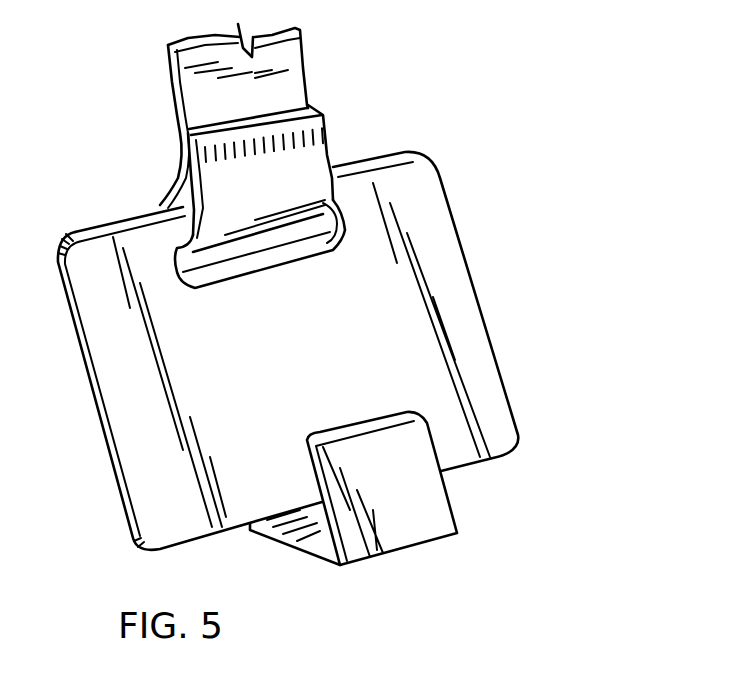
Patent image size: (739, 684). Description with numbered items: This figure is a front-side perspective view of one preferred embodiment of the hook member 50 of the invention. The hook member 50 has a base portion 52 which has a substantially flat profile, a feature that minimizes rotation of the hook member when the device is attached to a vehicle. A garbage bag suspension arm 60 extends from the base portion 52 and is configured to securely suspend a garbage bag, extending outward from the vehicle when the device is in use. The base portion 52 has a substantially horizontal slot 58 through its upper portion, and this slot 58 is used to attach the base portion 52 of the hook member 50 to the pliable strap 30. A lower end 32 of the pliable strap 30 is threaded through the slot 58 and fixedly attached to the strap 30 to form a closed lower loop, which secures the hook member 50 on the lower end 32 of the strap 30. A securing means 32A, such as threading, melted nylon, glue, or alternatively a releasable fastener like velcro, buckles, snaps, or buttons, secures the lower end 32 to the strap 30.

The pliable strap 30 is at (235, 87).
The lower end of the pliable strap 32 is at (364, 145).
The securing means 32A is at (330, 145).
The hook member 50 is at (344, 294).
The base portion 52 is at (492, 345).
The slot 58 is at (225, 263).
The garbage bag suspension arm 60 is at (418, 487).